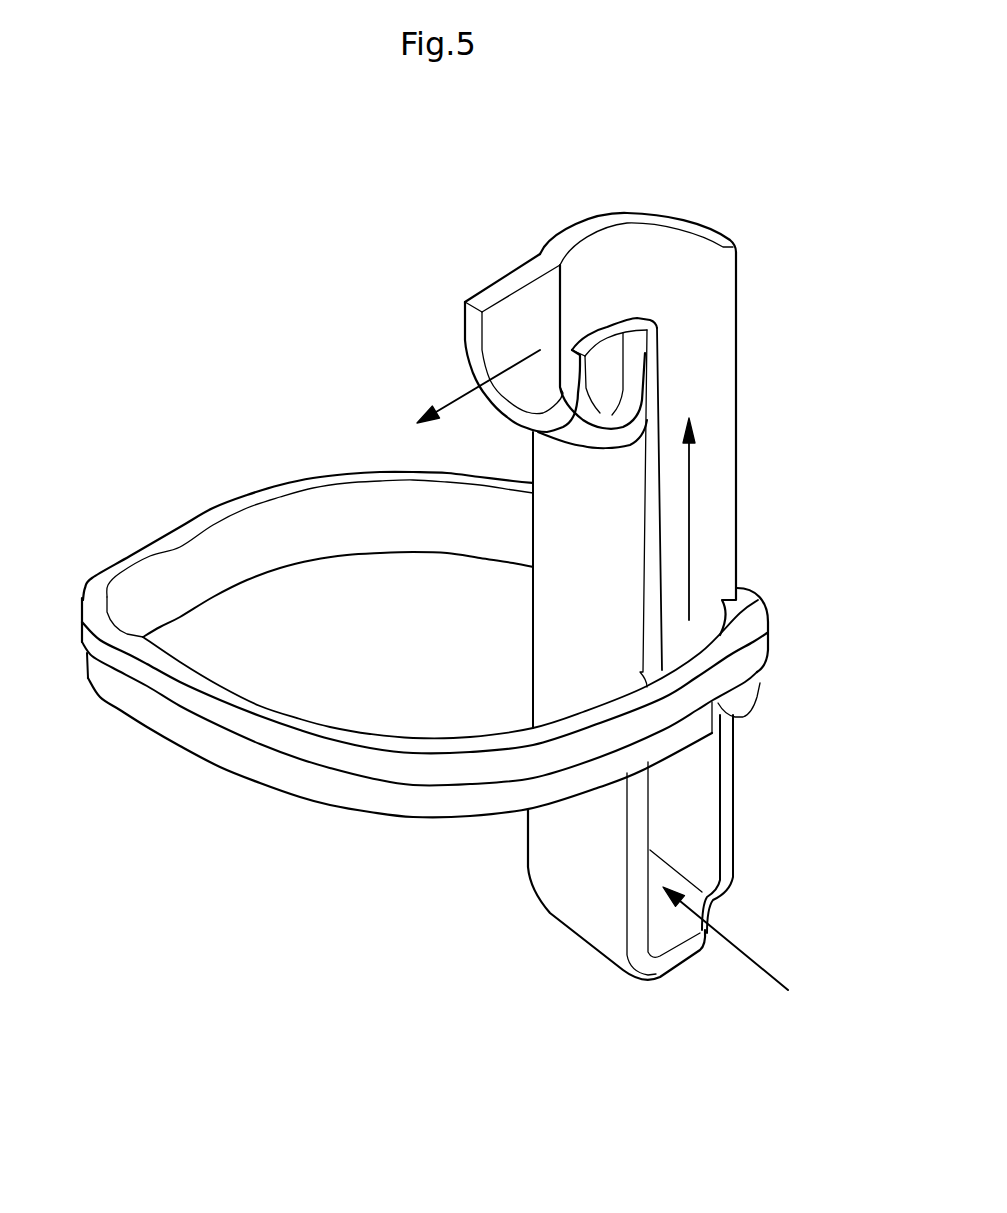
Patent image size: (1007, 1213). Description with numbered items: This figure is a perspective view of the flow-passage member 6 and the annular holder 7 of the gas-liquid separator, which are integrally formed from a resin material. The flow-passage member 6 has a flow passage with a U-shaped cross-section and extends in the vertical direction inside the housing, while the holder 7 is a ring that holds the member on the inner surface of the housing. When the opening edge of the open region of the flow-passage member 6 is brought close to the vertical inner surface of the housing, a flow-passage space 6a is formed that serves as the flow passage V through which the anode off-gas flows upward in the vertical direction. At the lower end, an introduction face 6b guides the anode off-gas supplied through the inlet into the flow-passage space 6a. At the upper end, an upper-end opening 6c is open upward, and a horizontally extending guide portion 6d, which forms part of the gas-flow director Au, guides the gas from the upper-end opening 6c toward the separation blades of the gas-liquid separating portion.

The flow-passage member 6 is at (530, 600).
The flow-passage space 6a is at (653, 295).
The introduction face 6b is at (665, 925).
The upper-end opening 6c is at (595, 242).
The guide portion 6d is at (473, 331).
The annular holder 7 is at (187, 518).
The gas-flow director Au is at (690, 283).
The flow passage V is at (690, 475).